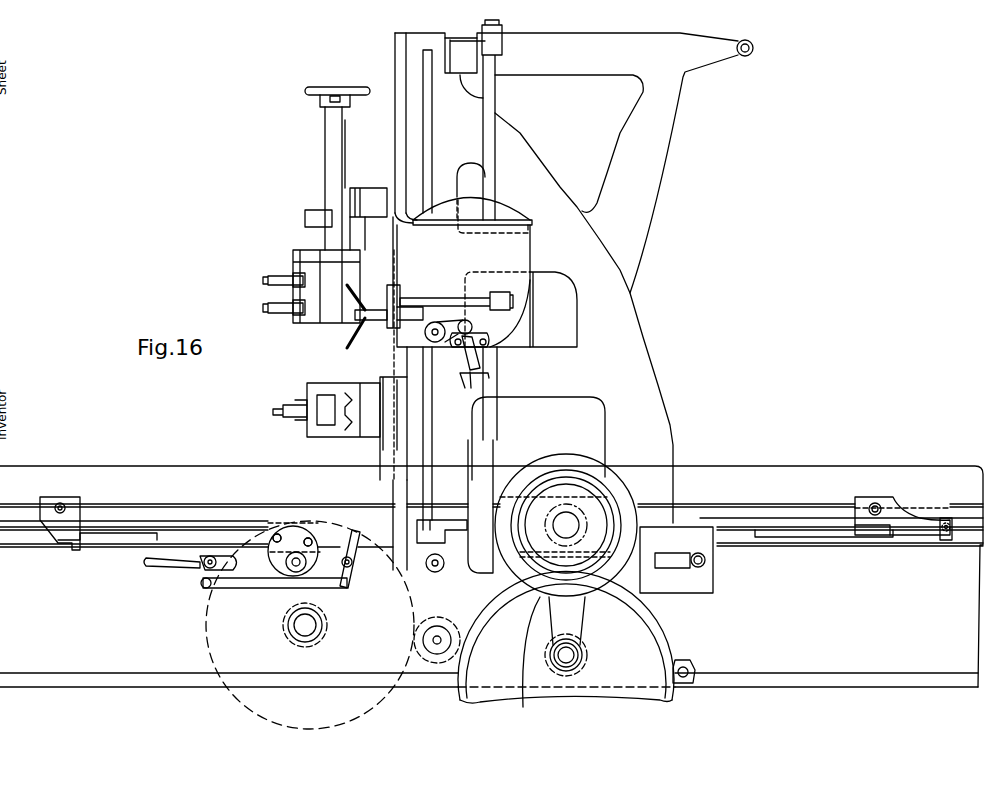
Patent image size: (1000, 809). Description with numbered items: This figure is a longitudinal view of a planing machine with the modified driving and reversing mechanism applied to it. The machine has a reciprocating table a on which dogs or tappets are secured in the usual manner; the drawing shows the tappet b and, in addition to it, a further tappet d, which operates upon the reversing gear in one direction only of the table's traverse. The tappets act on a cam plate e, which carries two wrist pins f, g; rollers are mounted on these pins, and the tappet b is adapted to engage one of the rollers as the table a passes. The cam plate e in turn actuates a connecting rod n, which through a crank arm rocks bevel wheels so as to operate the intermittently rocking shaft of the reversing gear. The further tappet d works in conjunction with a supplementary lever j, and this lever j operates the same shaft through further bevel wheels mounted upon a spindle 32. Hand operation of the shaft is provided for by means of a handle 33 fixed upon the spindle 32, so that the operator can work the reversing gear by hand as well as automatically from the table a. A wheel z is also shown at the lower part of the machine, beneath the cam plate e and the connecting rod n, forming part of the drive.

The reciprocating table a is at (800, 480).
The tappet b is at (886, 520).
The tappet d is at (944, 540).
The cam plate e is at (273, 556).
The wrist pin f is at (275, 536).
The wrist pin g is at (307, 540).
The lever j is at (356, 560).
The connecting rod n is at (270, 588).
The wheel z is at (566, 639).
The spindle 32 is at (204, 568).
The handle 33 is at (143, 563).